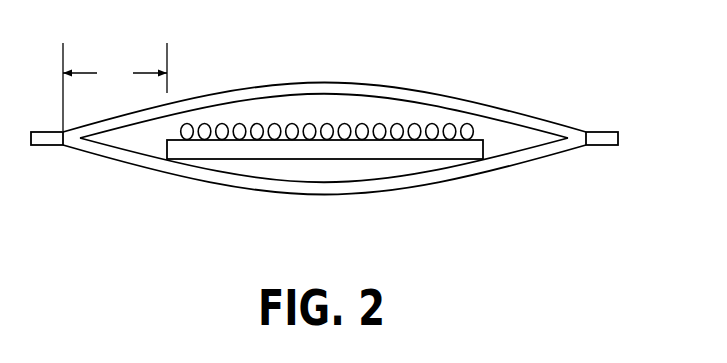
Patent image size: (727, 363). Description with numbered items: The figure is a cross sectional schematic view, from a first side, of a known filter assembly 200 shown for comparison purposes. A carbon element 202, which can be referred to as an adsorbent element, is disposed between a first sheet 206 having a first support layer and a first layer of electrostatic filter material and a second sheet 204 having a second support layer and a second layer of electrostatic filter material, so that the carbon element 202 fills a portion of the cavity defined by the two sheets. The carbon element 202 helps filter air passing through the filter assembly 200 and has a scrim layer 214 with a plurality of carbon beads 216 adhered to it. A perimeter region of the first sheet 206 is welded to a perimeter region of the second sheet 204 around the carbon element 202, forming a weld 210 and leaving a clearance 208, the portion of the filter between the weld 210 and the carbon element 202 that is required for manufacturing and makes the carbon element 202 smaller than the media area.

The filter assembly 200 is at (324, 126).
The carbon element 202 is at (366, 112).
The second sheet 204 is at (477, 179).
The first sheet 206 is at (456, 93).
The clearance 208 is at (115, 87).
The weld 210 is at (52, 172).
The scrim layer 214 is at (205, 151).
The carbon beads 216 is at (245, 127).